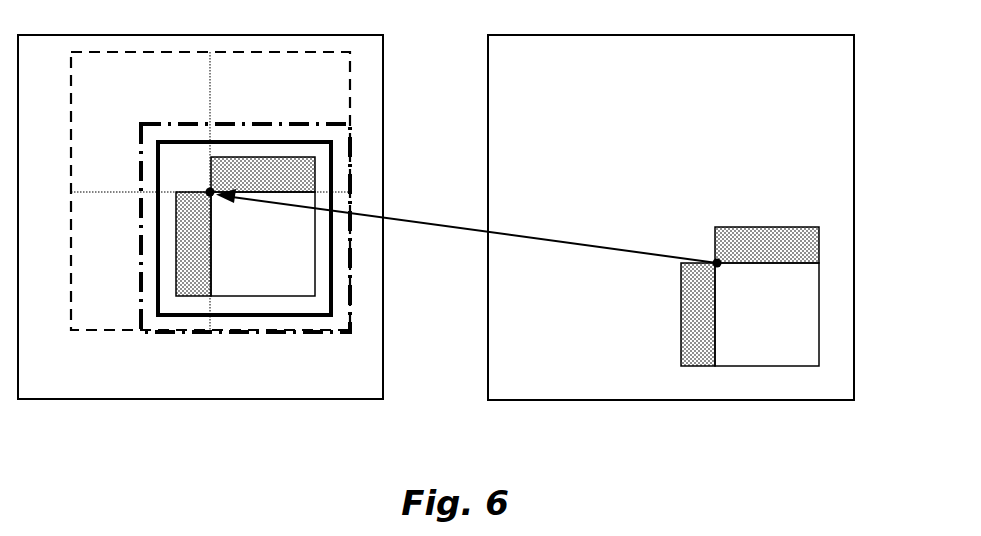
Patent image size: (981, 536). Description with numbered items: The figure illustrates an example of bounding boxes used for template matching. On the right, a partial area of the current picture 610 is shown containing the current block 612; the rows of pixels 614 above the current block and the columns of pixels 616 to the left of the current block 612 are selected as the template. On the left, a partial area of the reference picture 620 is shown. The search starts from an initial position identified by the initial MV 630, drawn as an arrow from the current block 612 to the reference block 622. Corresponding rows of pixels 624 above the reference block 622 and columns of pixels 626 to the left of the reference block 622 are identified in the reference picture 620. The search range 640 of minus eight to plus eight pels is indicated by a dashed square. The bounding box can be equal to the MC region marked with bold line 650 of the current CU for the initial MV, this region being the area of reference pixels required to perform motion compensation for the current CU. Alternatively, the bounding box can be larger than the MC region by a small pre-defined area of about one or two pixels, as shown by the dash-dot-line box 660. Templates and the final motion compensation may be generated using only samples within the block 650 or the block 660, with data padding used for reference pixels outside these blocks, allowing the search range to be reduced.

The current picture 610 is at (690, 35).
The current block 612 is at (765, 366).
The rows of pixels above current block 614 is at (819, 243).
The columns of pixels to the left of the current block 616 is at (678, 347).
The reference picture 620 is at (218, 35).
The reference block 622 is at (290, 296).
The rows of pixels above the reference block 624 is at (315, 170).
The columns of pixels to the left of the reference block 626 is at (193, 296).
The initial MV 630 is at (436, 220).
The search range 640 is at (278, 52).
The MC region (bold line) 650 is at (331, 141).
The dash-dot-line box 660 is at (340, 123).